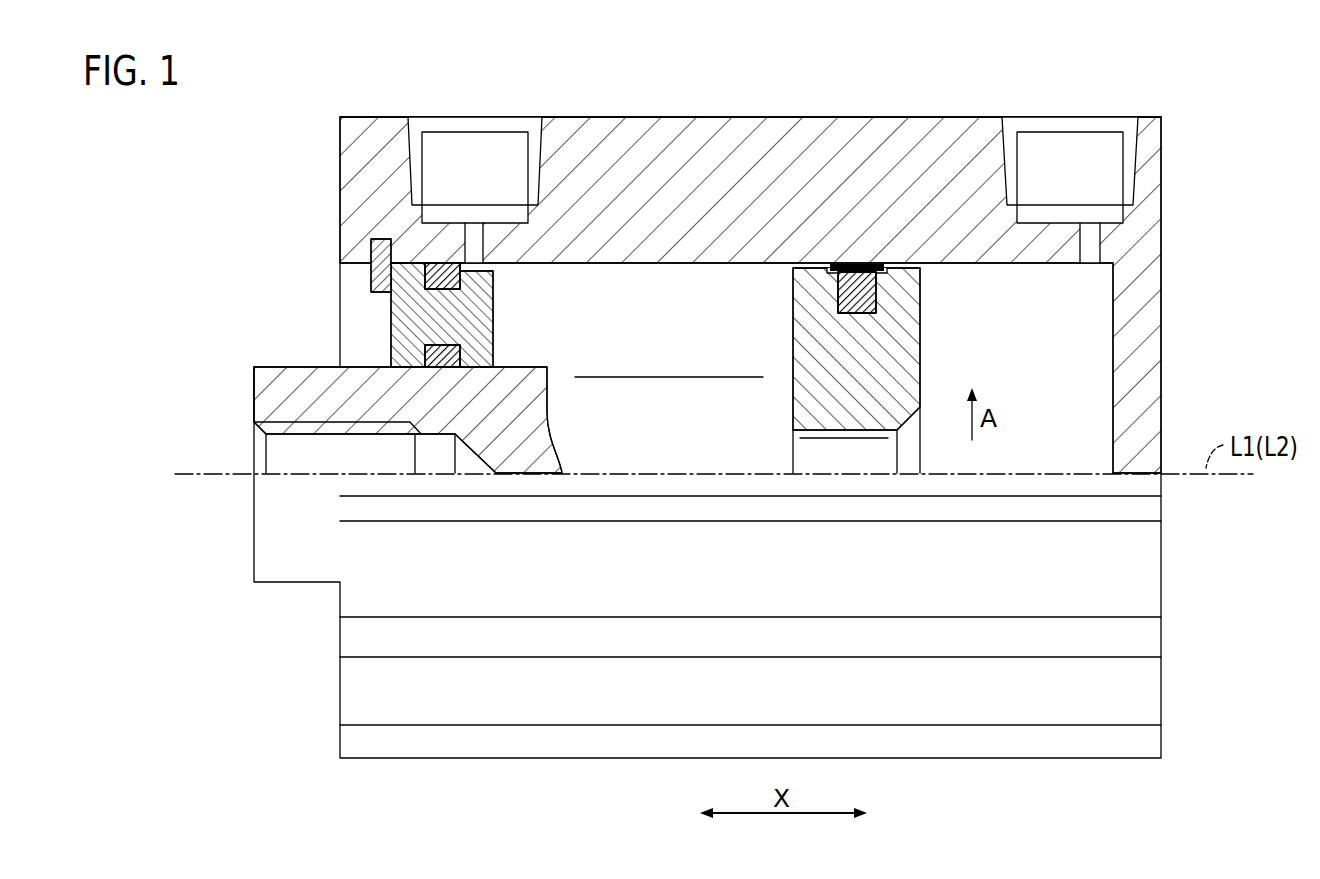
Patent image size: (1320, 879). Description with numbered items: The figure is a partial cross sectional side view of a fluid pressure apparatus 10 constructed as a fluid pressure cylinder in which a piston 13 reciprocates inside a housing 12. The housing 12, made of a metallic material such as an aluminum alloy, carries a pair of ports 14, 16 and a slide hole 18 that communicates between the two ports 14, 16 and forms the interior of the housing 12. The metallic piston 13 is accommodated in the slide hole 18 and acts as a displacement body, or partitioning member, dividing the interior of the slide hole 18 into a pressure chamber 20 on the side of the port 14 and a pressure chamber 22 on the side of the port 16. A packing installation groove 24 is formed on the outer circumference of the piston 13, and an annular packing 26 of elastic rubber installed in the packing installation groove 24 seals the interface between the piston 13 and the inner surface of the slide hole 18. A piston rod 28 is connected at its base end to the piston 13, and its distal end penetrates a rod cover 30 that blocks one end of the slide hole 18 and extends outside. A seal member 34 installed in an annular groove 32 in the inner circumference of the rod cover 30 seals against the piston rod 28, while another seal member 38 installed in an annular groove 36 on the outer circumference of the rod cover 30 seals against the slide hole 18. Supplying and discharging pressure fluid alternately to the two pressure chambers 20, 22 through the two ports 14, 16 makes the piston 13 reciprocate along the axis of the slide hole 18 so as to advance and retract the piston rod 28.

The fluid pressure apparatus 10 is at (821, 58).
The housing 12 is at (650, 135).
The piston 13 is at (807, 403).
The port 14 is at (476, 147).
The port 16 is at (1077, 147).
The slide hole 18 is at (588, 264).
The pressure chamber 20 is at (711, 297).
The pressure chamber 22 is at (943, 300).
The packing installation groove 24 is at (850, 315).
The packing 26 is at (843, 263).
The piston rod 28 is at (275, 378).
The rod cover 30 is at (407, 318).
The annular groove 32 is at (423, 358).
The seal member 34 is at (462, 347).
The annular groove 36 is at (378, 276).
The seal member 38 is at (460, 283).